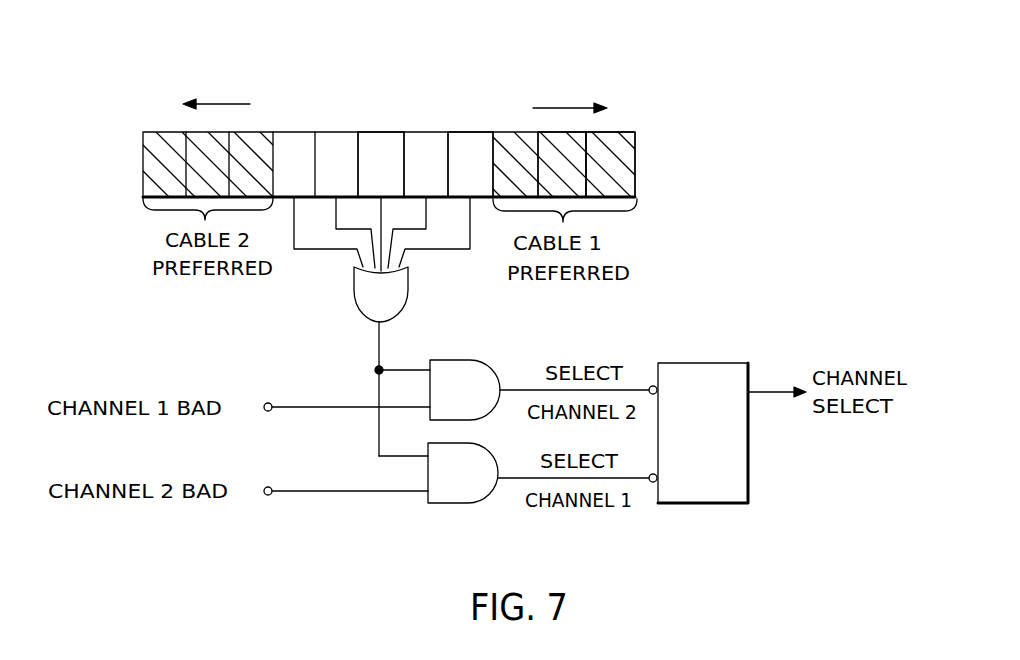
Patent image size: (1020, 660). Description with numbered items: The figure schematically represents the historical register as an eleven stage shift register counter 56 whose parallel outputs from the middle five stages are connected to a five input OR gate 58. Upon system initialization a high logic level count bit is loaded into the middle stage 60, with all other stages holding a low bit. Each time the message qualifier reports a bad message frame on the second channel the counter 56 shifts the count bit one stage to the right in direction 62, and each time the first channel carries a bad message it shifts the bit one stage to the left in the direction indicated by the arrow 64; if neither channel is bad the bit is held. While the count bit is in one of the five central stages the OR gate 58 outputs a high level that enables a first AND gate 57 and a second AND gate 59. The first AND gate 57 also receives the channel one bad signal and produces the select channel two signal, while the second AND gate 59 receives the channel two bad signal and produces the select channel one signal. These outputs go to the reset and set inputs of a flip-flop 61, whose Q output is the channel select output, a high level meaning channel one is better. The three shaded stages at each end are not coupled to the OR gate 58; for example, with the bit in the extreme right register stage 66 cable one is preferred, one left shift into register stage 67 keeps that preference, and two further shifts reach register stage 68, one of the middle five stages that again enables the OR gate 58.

The shift register counter 56 is at (340, 117).
The first AND gate 57 is at (457, 360).
The OR gate 58 is at (352, 296).
The second AND gate 59 is at (440, 505).
The middle stage 60 is at (395, 174).
The flip-flop 61 is at (712, 504).
The direction 62 is at (553, 108).
The arrow 64 is at (221, 103).
The register stage 66 is at (624, 174).
The register stage 67 is at (576, 174).
The register stage 68 is at (484, 174).